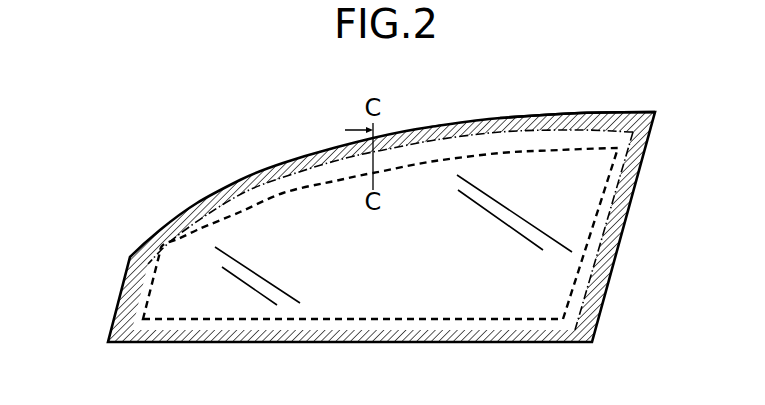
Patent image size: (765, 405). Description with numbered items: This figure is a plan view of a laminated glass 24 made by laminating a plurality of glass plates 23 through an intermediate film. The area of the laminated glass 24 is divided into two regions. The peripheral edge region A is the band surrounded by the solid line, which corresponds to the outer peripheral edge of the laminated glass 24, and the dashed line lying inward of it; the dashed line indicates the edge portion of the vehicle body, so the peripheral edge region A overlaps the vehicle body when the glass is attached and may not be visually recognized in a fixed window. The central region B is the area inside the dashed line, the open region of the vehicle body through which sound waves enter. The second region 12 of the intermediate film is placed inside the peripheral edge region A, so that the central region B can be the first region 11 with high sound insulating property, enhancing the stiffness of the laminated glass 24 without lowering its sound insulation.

The first region 11 is at (283, 238).
The second region 12 is at (197, 213).
The glass plate 23 is at (585, 113).
The laminated glass 24 is at (127, 206).
The peripheral edge region A is at (608, 205).
The central region B is at (565, 275).